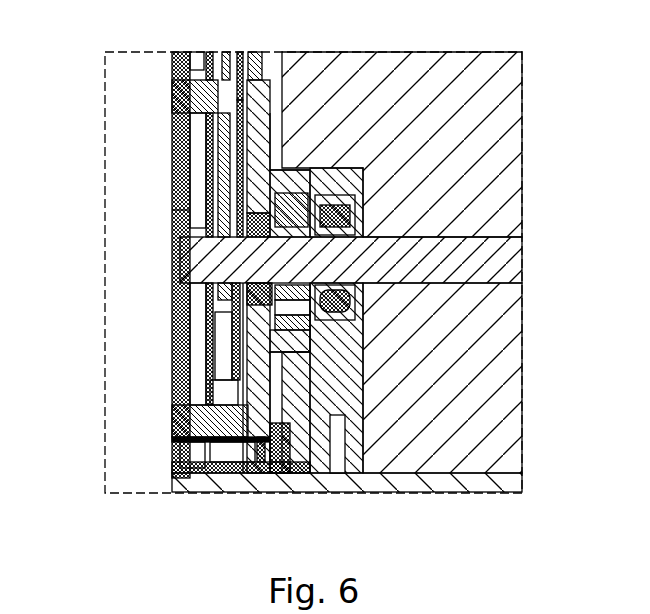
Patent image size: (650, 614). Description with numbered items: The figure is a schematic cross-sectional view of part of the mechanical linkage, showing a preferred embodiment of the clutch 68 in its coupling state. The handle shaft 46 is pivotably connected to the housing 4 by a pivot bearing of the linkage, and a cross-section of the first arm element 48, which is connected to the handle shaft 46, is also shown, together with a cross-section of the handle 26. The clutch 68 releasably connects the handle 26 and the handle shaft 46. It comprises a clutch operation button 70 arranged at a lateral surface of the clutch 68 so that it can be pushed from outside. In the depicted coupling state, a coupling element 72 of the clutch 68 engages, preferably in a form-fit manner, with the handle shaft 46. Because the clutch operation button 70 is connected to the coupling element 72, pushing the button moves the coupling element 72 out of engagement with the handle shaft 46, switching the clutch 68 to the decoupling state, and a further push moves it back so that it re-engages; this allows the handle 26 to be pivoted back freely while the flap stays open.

The housing 4 is at (515, 112).
The handle shaft 46 is at (515, 252).
The coupling element 72 is at (172, 211).
The clutch operation button 70 is at (172, 336).
The clutch 68 is at (172, 424).
The handle 26 is at (190, 482).
The first arm element 48 is at (282, 480).